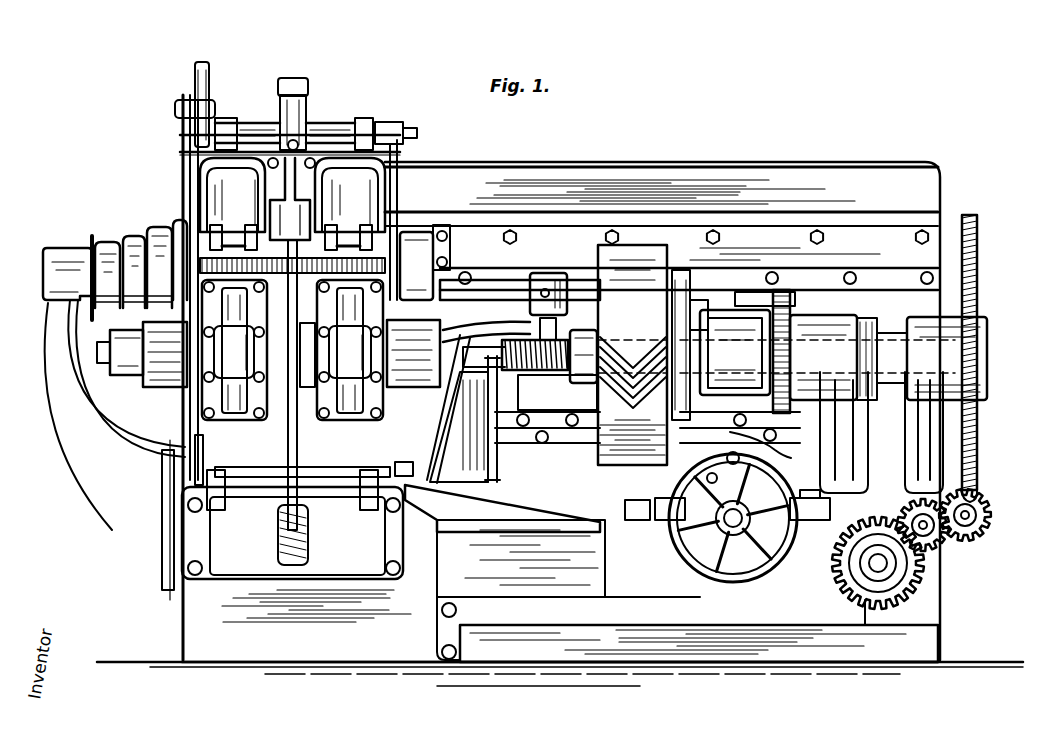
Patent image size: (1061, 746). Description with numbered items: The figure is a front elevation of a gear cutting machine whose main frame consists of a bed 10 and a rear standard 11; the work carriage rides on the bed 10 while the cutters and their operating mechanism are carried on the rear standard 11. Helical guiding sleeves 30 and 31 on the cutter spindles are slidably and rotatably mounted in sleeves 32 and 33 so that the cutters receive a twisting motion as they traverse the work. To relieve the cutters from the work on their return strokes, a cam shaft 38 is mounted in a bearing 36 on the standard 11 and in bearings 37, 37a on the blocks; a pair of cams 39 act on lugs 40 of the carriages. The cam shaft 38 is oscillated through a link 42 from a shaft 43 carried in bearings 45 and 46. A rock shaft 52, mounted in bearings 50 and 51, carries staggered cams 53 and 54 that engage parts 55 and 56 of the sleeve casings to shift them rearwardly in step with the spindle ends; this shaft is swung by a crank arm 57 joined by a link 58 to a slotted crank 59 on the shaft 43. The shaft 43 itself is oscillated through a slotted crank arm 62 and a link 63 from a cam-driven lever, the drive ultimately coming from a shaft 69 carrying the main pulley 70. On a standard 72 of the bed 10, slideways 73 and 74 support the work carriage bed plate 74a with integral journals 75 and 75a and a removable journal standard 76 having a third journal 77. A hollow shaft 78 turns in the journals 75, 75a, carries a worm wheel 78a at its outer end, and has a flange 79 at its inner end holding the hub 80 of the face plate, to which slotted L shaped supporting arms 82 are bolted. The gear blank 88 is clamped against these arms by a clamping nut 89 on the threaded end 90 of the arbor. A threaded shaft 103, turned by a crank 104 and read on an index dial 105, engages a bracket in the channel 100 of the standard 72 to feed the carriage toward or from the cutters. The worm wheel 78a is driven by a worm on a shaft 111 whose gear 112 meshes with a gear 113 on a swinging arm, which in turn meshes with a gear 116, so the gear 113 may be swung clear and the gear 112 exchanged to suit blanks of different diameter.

The bed 10 is at (907, 640).
The rear standard 11 is at (658, 160).
The helical guiding sleeve 30 is at (140, 326).
The helical guiding sleeve 31 is at (486, 324).
The sleeve 32 is at (156, 386).
The sleeve 33 is at (412, 378).
The bearing 36 is at (416, 266).
The bearing 37 is at (728, 290).
The bearing 37a is at (546, 296).
The cam shaft 38 is at (470, 292).
The cam 39 is at (522, 308).
The lug 40 is at (533, 318).
The link 42 is at (400, 190).
The shaft 43 is at (416, 128).
The bearing 45 is at (364, 124).
The bearing 46 is at (222, 126).
The bearing 50 is at (368, 498).
The bearing 51 is at (228, 496).
The rock shaft 52 is at (410, 482).
The cam 53 is at (342, 472).
The cam 54 is at (246, 472).
The part of casing 55 is at (354, 464).
The part of casing 56 is at (246, 456).
The crank arm 57 is at (194, 474).
The link 58 is at (184, 420).
The slotted crank 59 is at (198, 68).
The slotted crank arm 62 is at (306, 104).
The link 63 is at (292, 80).
The shaft 69 is at (44, 262).
The pulley 70 is at (140, 236).
The standard 72 is at (620, 546).
The slideway 73 is at (644, 517).
The slideway 74 is at (742, 534).
The bed plate 74a is at (516, 502).
The journal 75 is at (850, 330).
The journal 75a is at (956, 318).
The removable journal standard 76 is at (444, 494).
The journal 77 is at (450, 378).
The hollow shaft 78 is at (892, 408).
The worm wheel 78a is at (977, 240).
The flange 79 is at (796, 290).
The hub 80 is at (767, 452).
The L shaped supporting arm 82 is at (692, 270).
The gear blank 88 is at (664, 254).
The clamping nut 89 is at (582, 338).
The threaded end 90 is at (524, 378).
The channel 100 is at (818, 524).
The threaded shaft 103 is at (732, 518).
The crank 104 is at (698, 560).
The index wheel or dial 105 is at (750, 526).
The shaft 111 is at (988, 520).
The gear 112 is at (988, 510).
The gear 113 is at (960, 532).
The gear 116 is at (850, 586).